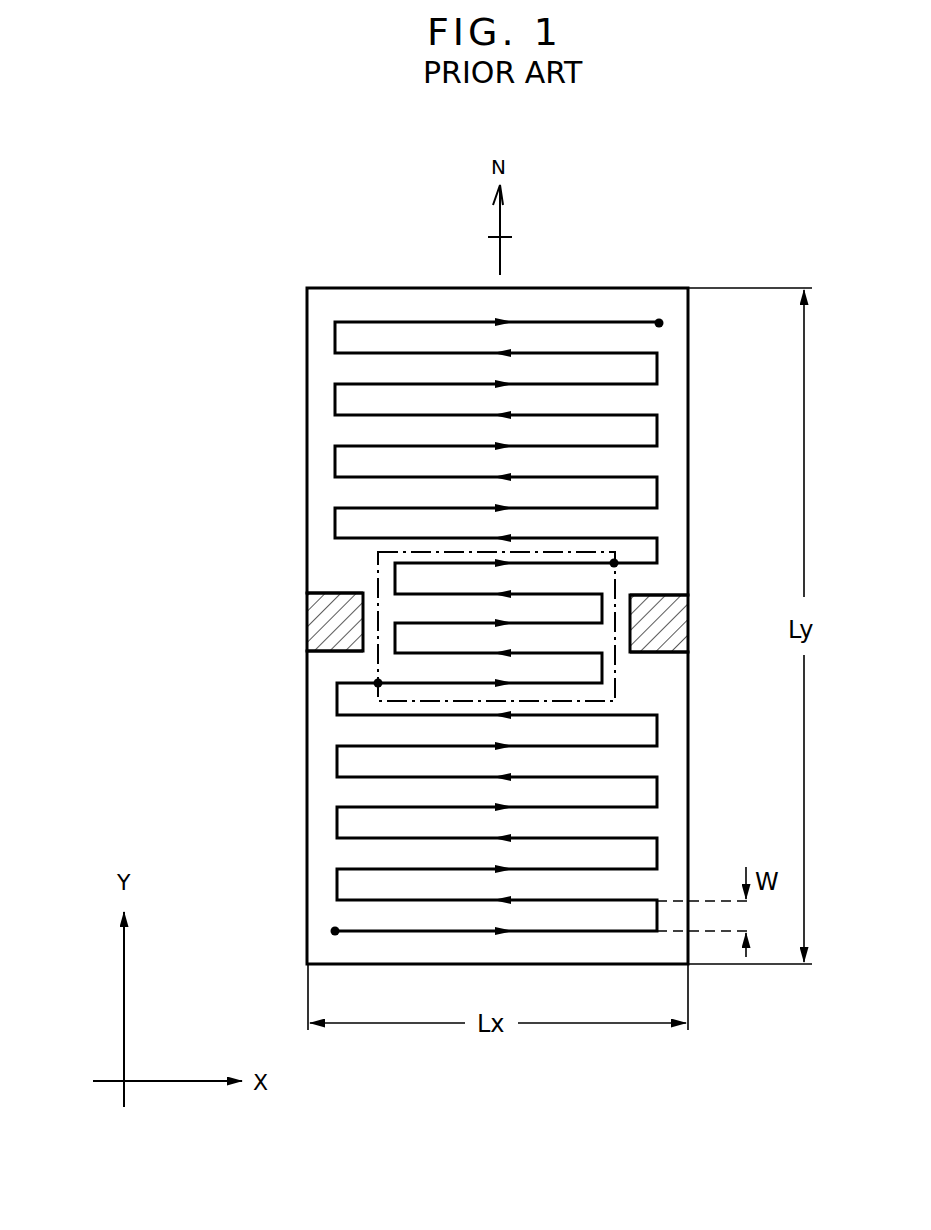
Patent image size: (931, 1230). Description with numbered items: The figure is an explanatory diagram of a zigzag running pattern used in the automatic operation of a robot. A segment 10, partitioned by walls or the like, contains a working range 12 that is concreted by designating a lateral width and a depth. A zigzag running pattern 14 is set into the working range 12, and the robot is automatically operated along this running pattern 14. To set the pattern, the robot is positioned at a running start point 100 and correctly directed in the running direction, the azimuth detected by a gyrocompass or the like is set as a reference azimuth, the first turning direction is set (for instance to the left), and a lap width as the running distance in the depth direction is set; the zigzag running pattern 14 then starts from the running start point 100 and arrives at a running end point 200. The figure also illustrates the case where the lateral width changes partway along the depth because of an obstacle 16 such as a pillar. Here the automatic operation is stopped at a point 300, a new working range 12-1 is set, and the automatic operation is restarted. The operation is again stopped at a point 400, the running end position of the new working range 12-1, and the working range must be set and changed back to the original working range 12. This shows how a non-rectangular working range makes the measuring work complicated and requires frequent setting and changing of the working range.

The segment 10 is at (300, 508).
The working range 12 is at (668, 689).
The new working range 12-1 is at (613, 553).
The zigzag running pattern 14 is at (350, 899).
The obstacle 16 is at (330, 618).
The running start point 100 is at (335, 931).
The running end point 200 is at (659, 323).
The point 300 is at (378, 683).
The point 400 is at (614, 563).